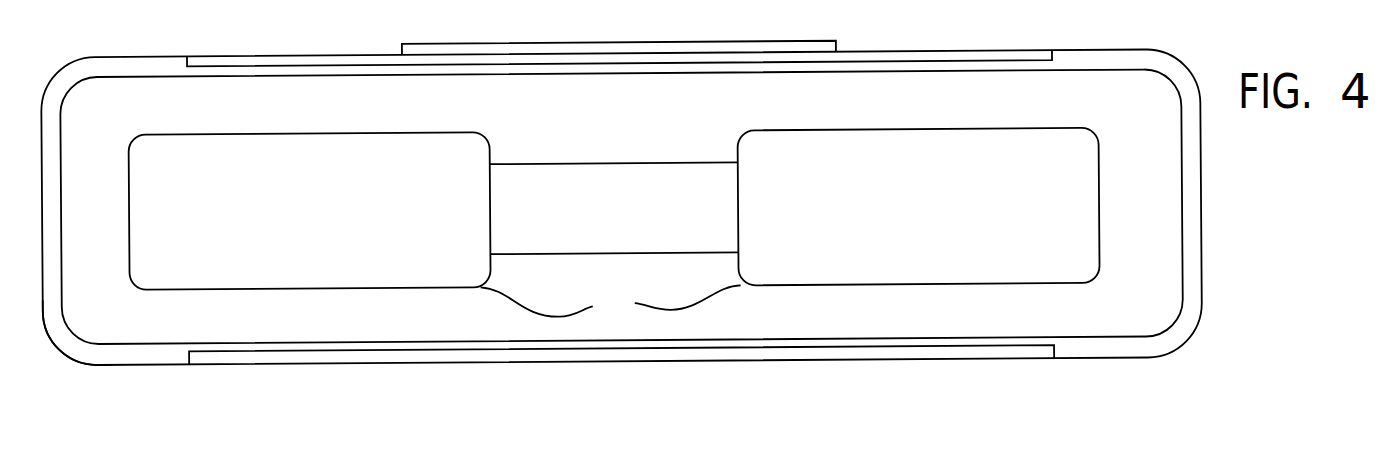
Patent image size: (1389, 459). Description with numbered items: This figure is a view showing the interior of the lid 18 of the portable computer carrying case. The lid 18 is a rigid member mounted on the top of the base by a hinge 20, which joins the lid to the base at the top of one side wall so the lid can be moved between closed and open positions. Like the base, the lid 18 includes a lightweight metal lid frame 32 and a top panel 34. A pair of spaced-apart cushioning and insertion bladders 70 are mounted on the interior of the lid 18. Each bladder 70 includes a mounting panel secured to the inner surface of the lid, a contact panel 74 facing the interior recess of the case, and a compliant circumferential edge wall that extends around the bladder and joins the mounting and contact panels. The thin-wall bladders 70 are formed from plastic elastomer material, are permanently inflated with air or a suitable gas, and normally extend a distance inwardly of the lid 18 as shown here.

The lid 18 is at (1223, 227).
The hinge 20 is at (613, 56).
The lid frame 32 is at (62, 352).
The top panel 34 is at (597, 206).
The cushioning and insertion bladder 70 is at (611, 301).
The contact panel 74 is at (208, 160).